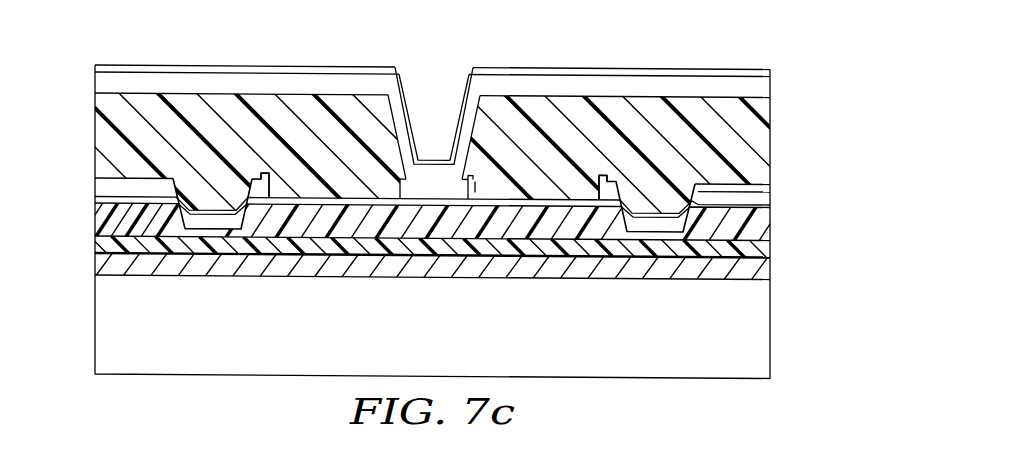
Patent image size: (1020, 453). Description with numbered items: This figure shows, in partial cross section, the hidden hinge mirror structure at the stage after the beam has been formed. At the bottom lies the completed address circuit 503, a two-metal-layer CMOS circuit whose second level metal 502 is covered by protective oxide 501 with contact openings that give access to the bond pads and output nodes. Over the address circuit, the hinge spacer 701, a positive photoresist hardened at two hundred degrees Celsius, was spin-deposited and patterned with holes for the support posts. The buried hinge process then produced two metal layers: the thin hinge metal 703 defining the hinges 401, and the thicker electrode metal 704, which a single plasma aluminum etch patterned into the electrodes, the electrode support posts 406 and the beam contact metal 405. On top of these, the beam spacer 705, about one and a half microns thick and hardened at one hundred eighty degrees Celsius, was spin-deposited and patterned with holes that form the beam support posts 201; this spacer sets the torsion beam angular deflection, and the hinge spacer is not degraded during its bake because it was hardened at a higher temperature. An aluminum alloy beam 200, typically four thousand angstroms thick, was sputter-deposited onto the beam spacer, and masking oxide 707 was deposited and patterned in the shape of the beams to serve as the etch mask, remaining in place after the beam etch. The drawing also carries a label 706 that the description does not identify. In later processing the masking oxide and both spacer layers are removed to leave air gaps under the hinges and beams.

The beam 200 is at (96, 83).
The beam support posts 201 is at (456, 101).
The hinges 401 is at (322, 198).
The beam contact metal 405 is at (476, 184).
The electrode support posts 406 is at (211, 214).
The protective oxide 501 is at (770, 248).
The second level metal (METL2) 502 is at (768, 278).
The address circuit 503 is at (766, 344).
The hinge spacer 701 is at (764, 224).
The hinge metal 703 is at (772, 204).
The electrode metal 704 is at (772, 183).
The beam spacer 705 is at (772, 130).
The liner layer 706 is at (384, 104).
The masking oxide 707 is at (677, 70).